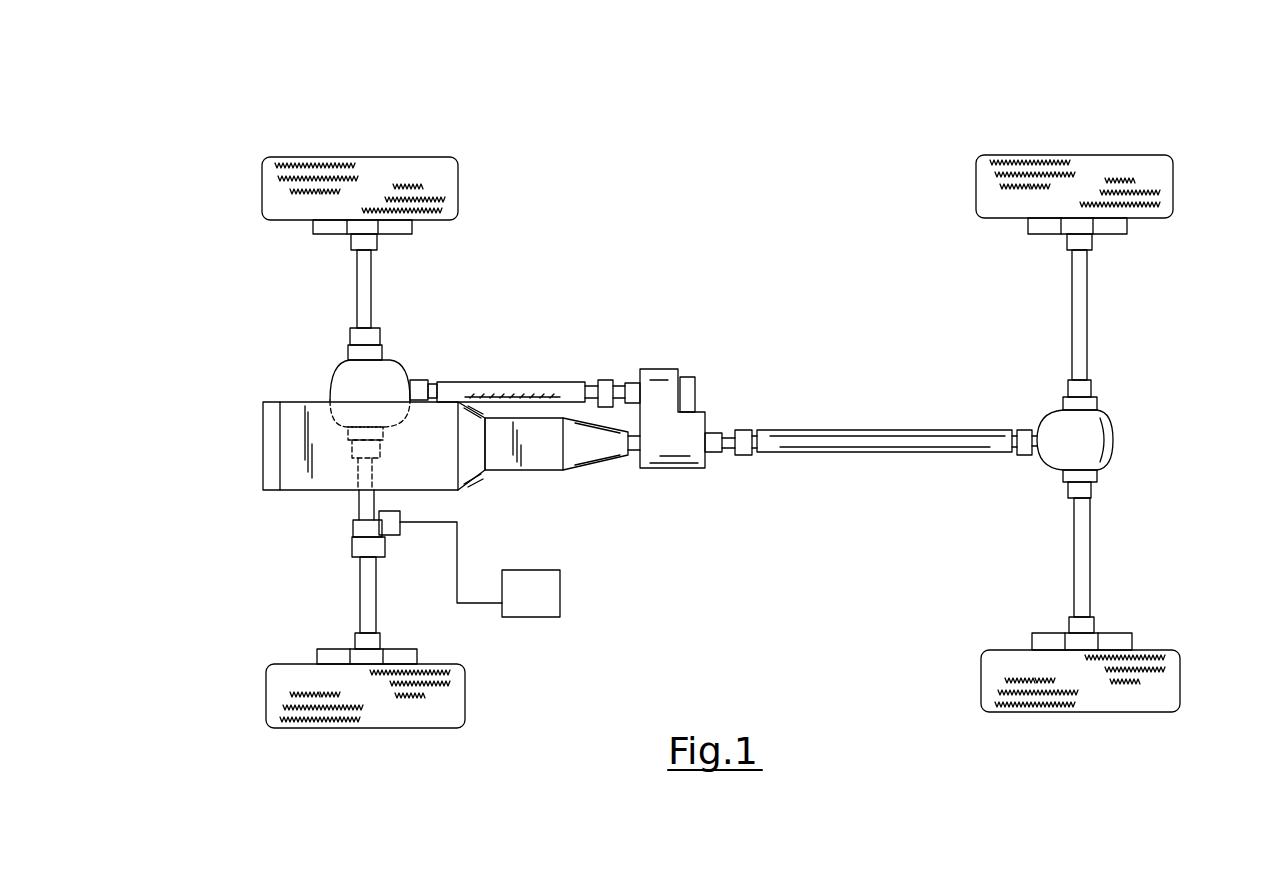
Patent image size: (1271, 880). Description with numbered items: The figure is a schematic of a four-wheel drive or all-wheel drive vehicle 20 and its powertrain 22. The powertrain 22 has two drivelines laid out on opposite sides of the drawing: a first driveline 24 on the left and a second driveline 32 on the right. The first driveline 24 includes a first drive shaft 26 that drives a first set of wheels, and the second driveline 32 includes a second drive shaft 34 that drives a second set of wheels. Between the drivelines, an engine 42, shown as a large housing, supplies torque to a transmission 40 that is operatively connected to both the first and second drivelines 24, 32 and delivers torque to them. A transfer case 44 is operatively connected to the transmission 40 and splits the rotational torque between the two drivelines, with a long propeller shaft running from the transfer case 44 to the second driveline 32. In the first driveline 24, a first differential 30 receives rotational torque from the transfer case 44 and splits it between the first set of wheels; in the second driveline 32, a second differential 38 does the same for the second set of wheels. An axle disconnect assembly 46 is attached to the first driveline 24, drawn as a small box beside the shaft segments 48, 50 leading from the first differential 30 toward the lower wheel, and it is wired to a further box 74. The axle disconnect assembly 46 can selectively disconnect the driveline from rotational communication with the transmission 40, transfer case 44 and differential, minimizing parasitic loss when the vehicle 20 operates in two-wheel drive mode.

The vehicle 20 is at (1100, 93).
The powertrain 22 is at (741, 298).
The first driveline 24 is at (393, 128).
The first drive shaft 26 is at (372, 297).
The first differential 30 is at (353, 380).
The second driveline 32 is at (1155, 132).
The second drive shaft 34 is at (1080, 295).
The second differential 38 is at (1086, 442).
The transmission 40 is at (588, 447).
The engine 42 is at (300, 457).
The transfer case 44 is at (672, 396).
The axle disconnect assembly 46 is at (394, 543).
The upper front half shaft segment 48 is at (362, 508).
The lower front half shaft segment 50 is at (366, 613).
The controller 74 is at (548, 600).